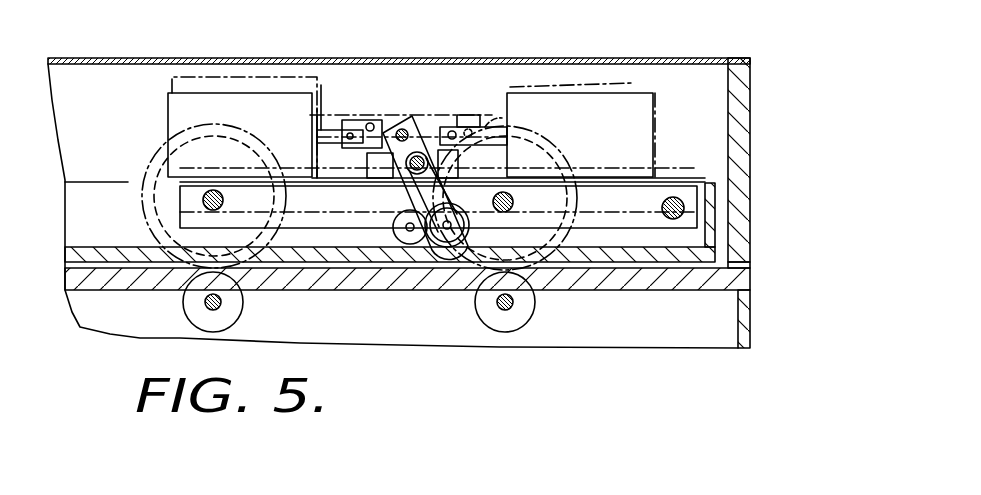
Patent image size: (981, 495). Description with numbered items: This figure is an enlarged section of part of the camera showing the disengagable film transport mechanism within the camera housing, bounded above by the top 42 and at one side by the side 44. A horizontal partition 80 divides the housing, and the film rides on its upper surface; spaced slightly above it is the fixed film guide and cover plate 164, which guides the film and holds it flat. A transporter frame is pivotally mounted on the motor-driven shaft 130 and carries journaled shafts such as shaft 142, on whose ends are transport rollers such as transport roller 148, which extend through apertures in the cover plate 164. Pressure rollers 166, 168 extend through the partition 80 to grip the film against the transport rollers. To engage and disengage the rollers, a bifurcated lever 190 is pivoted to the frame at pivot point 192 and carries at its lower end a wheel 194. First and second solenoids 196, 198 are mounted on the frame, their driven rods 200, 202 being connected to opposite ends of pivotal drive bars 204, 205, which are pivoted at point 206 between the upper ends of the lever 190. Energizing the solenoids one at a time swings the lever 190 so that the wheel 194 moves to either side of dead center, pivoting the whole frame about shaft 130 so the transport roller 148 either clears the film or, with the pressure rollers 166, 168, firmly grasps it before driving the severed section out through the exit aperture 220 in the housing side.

The top 42 is at (380, 57).
The side 44 is at (748, 110).
The partition 80 is at (362, 285).
The shaft 130 is at (696, 168).
The shaft 142 is at (226, 201).
The transport roller 148 is at (148, 194).
The film guide and cover plate 164 is at (130, 246).
The pressure roller 166 is at (243, 313).
The pressure roller 168 is at (533, 315).
The bifurcated lever 190 is at (438, 196).
The pivot point 192 is at (397, 188).
The wheel 194 is at (394, 232).
The first solenoid 196 is at (178, 101).
The second solenoid 198 is at (628, 84).
The driven rod 200 is at (331, 128).
The driven rod 202 is at (492, 120).
The pivotal drive bar 204 is at (441, 126).
The pivotal drive bar 205 is at (351, 121).
The pivot point 206 is at (430, 75).
The exit aperture 220 is at (740, 264).